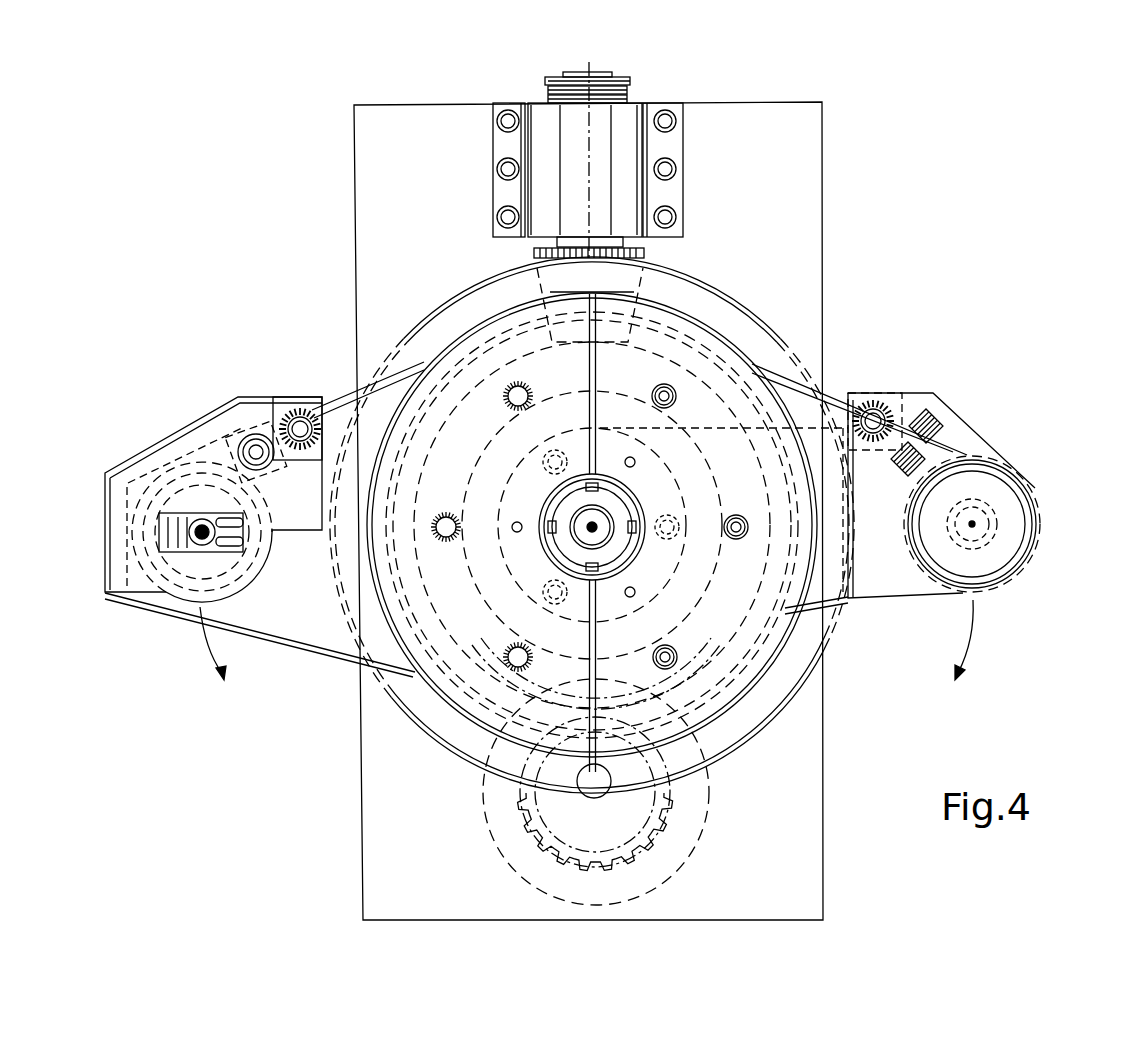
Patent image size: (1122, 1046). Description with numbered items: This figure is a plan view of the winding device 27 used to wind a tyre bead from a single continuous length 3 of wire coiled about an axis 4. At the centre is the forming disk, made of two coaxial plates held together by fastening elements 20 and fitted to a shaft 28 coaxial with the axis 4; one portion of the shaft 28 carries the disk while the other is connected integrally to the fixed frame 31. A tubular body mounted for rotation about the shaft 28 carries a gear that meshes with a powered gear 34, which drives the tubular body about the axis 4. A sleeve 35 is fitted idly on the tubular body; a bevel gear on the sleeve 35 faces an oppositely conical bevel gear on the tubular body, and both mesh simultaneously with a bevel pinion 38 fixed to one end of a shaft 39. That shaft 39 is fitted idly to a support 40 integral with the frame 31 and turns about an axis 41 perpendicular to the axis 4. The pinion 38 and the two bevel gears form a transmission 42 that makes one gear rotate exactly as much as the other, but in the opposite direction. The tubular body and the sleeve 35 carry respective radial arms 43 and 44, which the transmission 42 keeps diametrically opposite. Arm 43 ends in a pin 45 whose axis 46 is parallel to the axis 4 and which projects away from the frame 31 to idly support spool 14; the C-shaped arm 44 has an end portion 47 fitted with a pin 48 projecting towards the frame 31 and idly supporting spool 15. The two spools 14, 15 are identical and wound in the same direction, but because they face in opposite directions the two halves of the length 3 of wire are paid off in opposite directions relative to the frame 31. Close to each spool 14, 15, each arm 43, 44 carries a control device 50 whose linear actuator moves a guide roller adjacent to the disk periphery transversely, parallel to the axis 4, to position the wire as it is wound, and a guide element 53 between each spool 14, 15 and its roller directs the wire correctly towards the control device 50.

The length of wire 3 is at (840, 400).
The axis 4 is at (596, 521).
The spool 14 is at (1010, 527).
The spool 15 is at (197, 565).
The fastening elements 20 is at (445, 522).
The winding device 27 is at (840, 305).
The shaft 28 is at (618, 545).
The fixed frame 31 is at (772, 220).
The powered gear 34 is at (640, 808).
The sleeve 35 is at (715, 700).
The bevel pinion 38 is at (660, 268).
The shaft 39 is at (598, 74).
The support 40 is at (552, 135).
The axis 41 is at (614, 136).
The transmission 42 is at (530, 289).
The radial arm 43 is at (887, 575).
The radial arm 44 is at (290, 607).
The pin 45 is at (1022, 458).
The axis 46 is at (1012, 575).
The end portion 47 is at (128, 478).
The pin 48 is at (198, 525).
The control device 50 is at (300, 395).
The guide element 53 is at (240, 430).